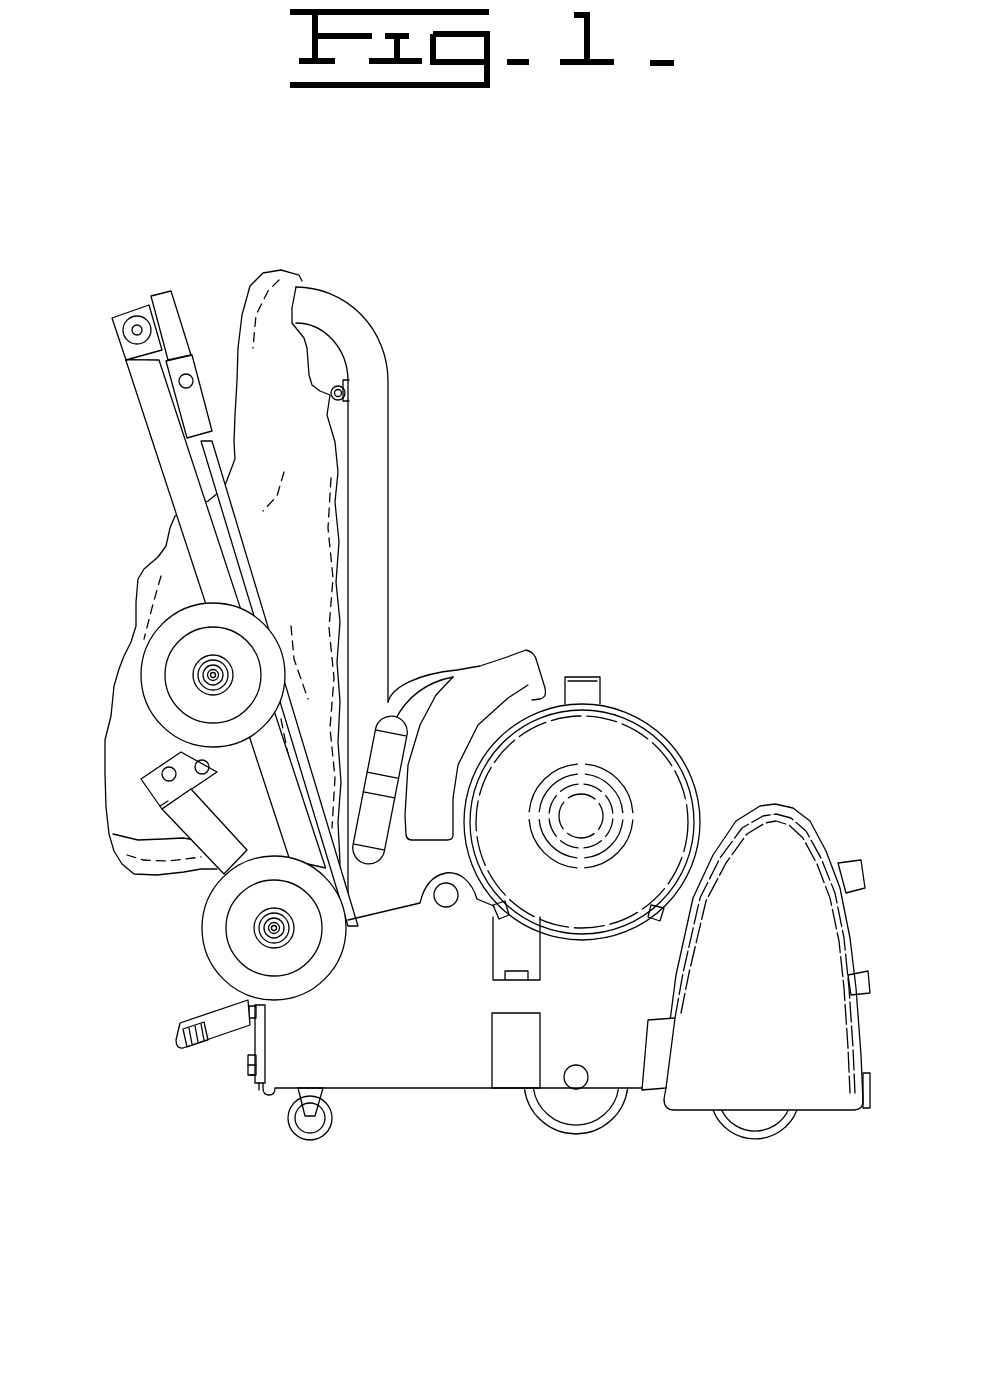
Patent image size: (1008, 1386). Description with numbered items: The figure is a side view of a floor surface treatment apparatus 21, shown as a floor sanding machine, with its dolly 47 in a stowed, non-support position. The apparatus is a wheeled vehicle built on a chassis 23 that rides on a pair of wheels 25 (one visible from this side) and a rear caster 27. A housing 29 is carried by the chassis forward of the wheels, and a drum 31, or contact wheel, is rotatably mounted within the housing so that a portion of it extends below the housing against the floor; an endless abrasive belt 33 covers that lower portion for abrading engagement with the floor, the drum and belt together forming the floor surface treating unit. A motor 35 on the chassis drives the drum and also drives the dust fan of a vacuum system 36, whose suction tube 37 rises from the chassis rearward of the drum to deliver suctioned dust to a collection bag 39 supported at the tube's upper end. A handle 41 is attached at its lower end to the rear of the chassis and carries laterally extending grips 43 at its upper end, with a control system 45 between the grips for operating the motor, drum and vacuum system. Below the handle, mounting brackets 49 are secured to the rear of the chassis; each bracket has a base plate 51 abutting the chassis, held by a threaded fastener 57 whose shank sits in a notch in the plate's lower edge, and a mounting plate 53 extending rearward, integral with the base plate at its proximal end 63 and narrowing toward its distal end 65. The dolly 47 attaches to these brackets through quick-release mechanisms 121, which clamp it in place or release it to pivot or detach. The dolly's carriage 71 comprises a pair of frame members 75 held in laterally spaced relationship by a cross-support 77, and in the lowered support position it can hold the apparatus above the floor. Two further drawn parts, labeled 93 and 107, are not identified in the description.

The floor surface treatment apparatus 21 is at (473, 863).
The chassis 23 is at (448, 1075).
The wheels 25 is at (594, 1128).
The rear caster 27 is at (329, 1126).
The housing 29 is at (774, 844).
The drum 31 is at (762, 1113).
The endless abrasive belt 33 is at (742, 1126).
The motor 35 is at (643, 749).
The vacuum system 36 is at (420, 595).
The suction tube 37 is at (374, 323).
The collection bag 39 is at (290, 271).
The handle 41 is at (150, 433).
The grips 43 is at (132, 324).
The control system 45 is at (192, 354).
The dolly 47 is at (146, 874).
The mounting brackets 49 is at (244, 1024).
The base plate 51 is at (271, 1088).
The mounting plate 53 is at (198, 1023).
The threaded fastener 57 is at (239, 1071).
The proximal end 63 is at (246, 1061).
The distal end 65 is at (178, 1026).
The carriage 71 is at (123, 811).
The frame members 75 is at (140, 838).
The cross-support 77 is at (160, 807).
The upper wheel 93 is at (132, 675).
The lower wheel 107 is at (200, 908).
The quick-release mechanisms 121 is at (180, 1040).